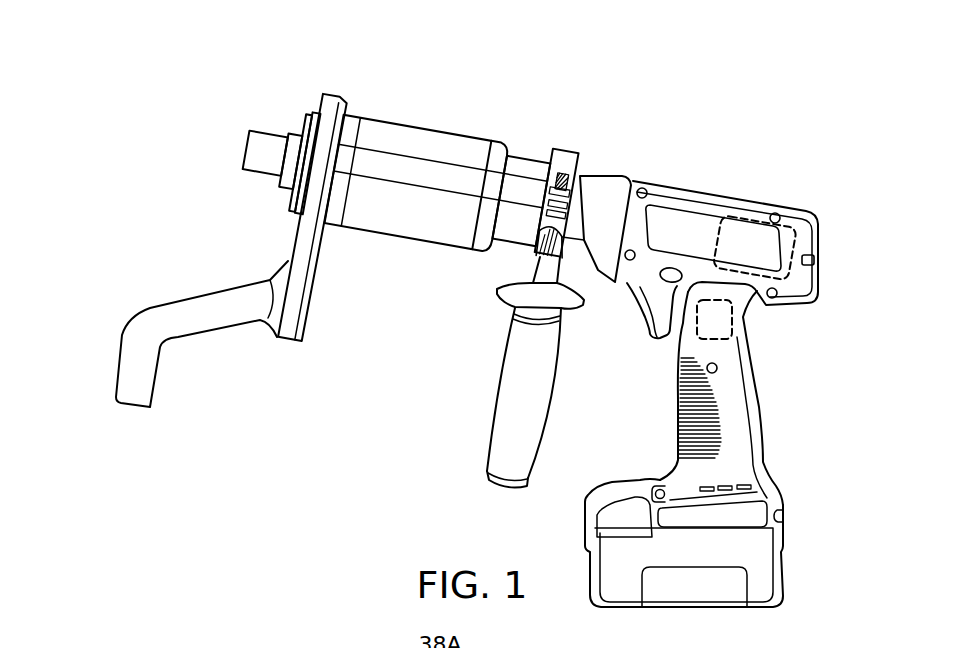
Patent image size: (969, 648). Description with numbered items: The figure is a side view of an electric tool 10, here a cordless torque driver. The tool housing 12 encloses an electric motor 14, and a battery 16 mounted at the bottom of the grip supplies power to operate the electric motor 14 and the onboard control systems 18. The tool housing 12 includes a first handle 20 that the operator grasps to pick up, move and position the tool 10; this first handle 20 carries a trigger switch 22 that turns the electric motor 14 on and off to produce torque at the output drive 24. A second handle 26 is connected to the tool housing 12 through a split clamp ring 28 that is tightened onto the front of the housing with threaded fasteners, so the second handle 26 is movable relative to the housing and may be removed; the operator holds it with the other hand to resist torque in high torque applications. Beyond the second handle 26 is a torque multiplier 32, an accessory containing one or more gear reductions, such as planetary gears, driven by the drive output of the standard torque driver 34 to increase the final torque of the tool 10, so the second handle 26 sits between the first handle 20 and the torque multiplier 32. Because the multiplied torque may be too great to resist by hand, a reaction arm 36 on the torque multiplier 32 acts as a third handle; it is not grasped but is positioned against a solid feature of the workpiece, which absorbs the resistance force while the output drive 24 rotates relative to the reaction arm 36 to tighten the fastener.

The electric tool 10 is at (498, 108).
The tool housing 12 is at (688, 190).
The electric motor 14 is at (755, 218).
The battery 16 is at (785, 556).
The onboard control systems 18 is at (745, 318).
The first handle 20 is at (760, 408).
The trigger switch 22 is at (646, 324).
The output drive 24 is at (265, 133).
The second handle 26 is at (498, 387).
The split clamp ring 28 is at (563, 150).
The torque multiplier 32 is at (428, 122).
The standard torque driver 34 is at (610, 177).
The reaction arm 36 is at (121, 386).